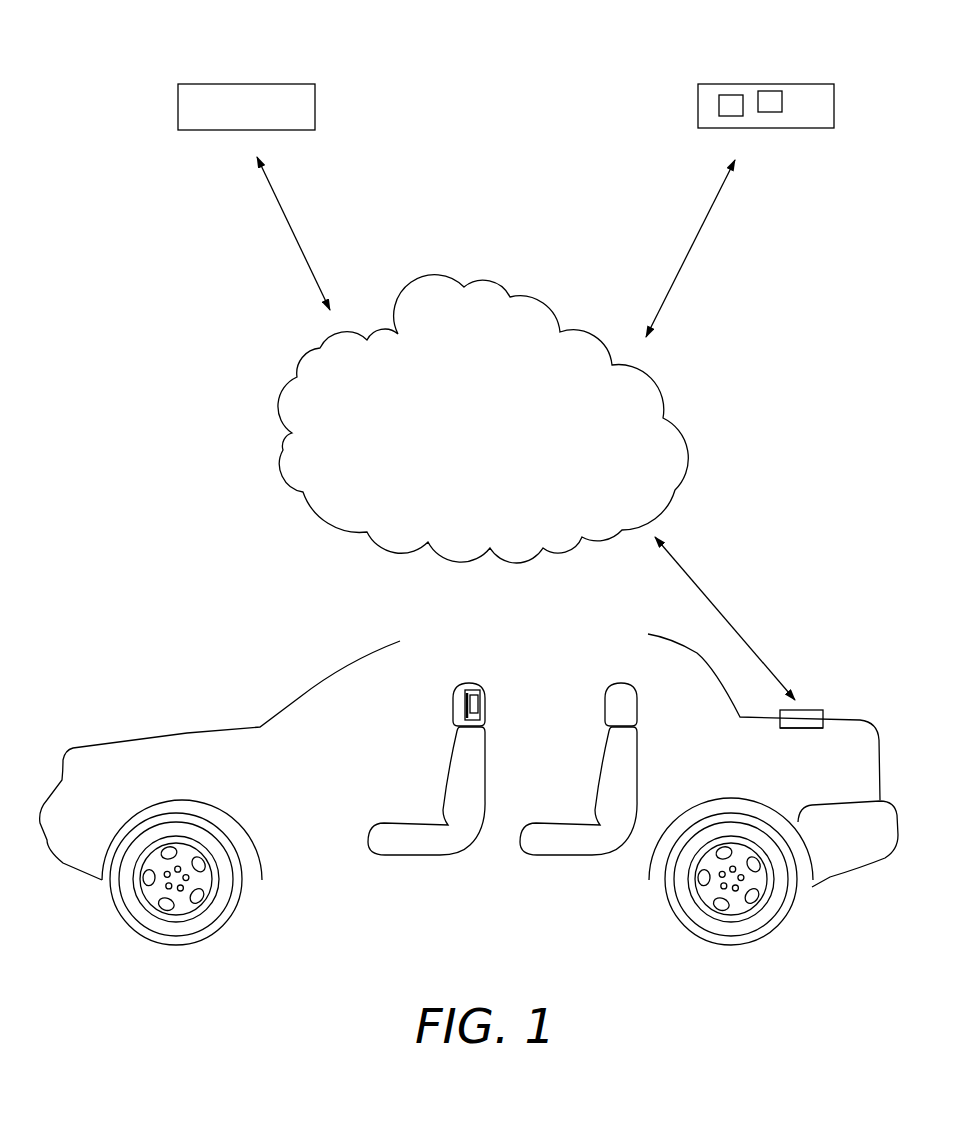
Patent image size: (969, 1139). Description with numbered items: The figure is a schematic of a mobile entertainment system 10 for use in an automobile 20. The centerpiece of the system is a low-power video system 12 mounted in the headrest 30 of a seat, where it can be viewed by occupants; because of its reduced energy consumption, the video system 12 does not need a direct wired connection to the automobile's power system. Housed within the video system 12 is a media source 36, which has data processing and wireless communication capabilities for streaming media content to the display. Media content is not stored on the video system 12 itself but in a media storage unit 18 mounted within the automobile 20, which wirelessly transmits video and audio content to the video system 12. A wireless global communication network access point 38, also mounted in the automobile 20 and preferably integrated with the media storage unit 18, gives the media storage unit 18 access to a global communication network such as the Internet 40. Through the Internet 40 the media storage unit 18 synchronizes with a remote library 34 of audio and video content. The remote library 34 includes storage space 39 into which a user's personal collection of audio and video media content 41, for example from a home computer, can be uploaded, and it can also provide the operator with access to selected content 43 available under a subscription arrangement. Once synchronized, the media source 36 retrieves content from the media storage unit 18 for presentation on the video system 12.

The mobile entertainment system 10 is at (151, 488).
The video system 12 is at (464, 702).
The media storage unit 18 is at (805, 728).
The automobile 20 is at (289, 674).
The headrest 30 is at (471, 683).
The remote library 34 is at (790, 84).
The media source 36 is at (480, 703).
The wireless global communication network access point 38 is at (808, 710).
The storage space 39 is at (729, 94).
The Internet 40 is at (690, 458).
The personal collection of audio and video media content 41 is at (249, 84).
The selected content 43 is at (772, 90).